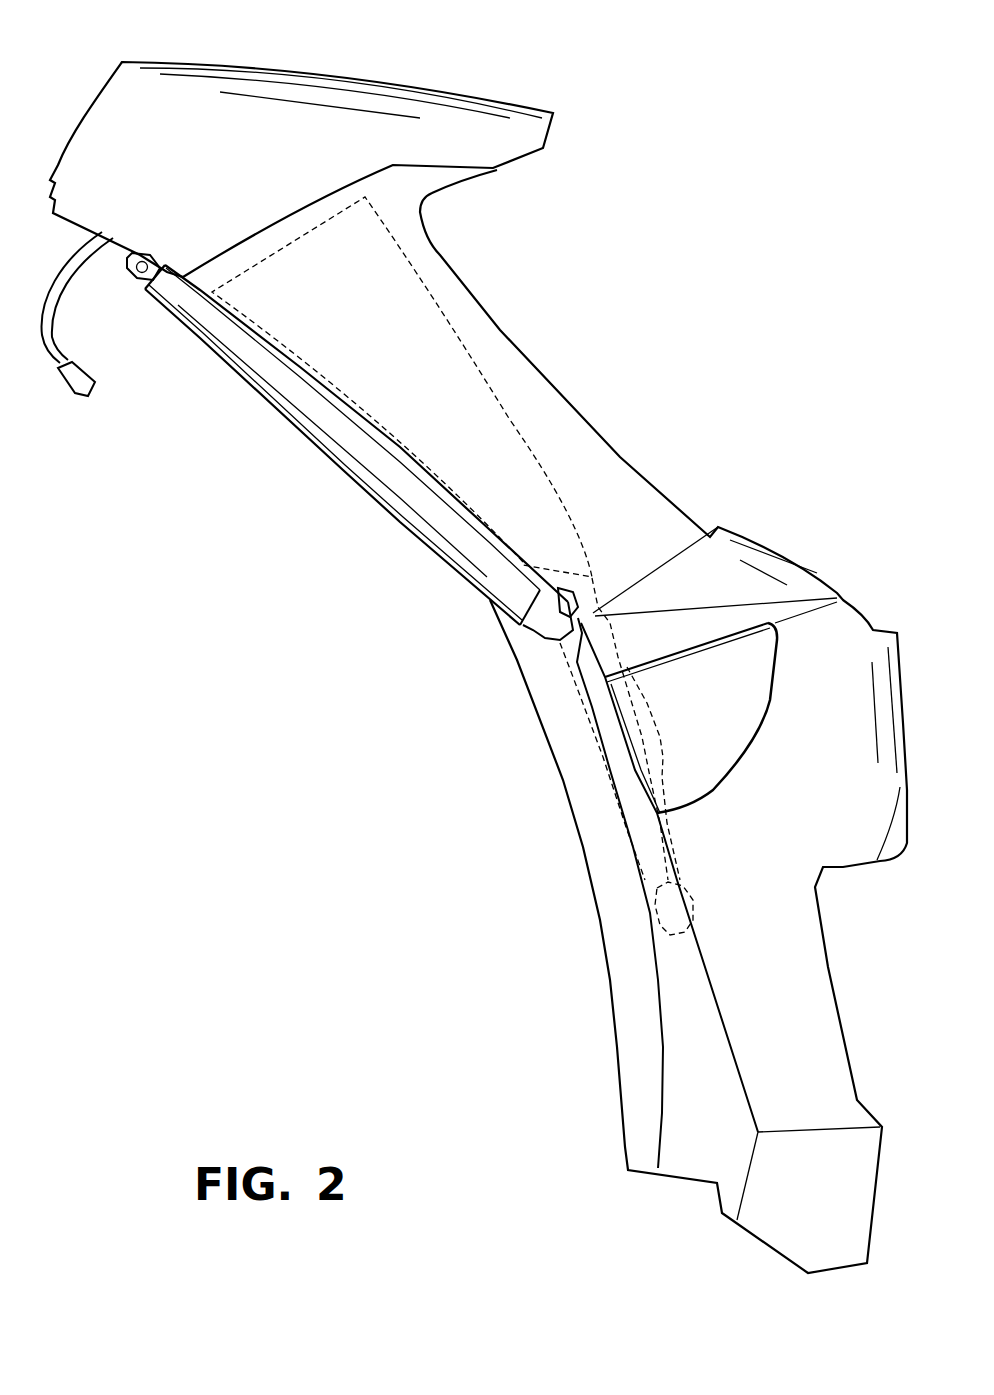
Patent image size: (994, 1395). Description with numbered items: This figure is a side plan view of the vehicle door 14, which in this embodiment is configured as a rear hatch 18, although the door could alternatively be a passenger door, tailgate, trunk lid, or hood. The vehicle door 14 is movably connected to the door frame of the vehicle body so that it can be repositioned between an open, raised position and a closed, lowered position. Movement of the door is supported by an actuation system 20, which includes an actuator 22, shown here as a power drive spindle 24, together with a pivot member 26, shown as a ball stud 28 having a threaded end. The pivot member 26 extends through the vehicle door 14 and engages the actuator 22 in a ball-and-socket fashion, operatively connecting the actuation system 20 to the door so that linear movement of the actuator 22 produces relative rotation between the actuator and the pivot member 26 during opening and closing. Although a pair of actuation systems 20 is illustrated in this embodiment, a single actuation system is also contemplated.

The vehicle door 14 is at (563, 72).
The rear hatch 18 is at (487, 101).
The actuation system 20 is at (282, 468).
The actuator 22 is at (355, 483).
The power drive spindle 24 is at (414, 513).
The pivot member 26 is at (582, 597).
The ball stud 28 is at (578, 622).